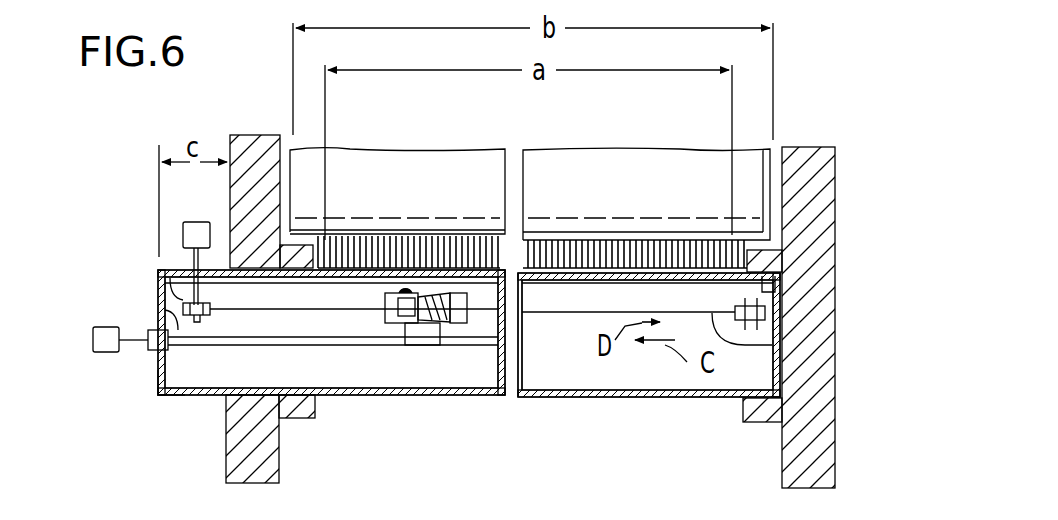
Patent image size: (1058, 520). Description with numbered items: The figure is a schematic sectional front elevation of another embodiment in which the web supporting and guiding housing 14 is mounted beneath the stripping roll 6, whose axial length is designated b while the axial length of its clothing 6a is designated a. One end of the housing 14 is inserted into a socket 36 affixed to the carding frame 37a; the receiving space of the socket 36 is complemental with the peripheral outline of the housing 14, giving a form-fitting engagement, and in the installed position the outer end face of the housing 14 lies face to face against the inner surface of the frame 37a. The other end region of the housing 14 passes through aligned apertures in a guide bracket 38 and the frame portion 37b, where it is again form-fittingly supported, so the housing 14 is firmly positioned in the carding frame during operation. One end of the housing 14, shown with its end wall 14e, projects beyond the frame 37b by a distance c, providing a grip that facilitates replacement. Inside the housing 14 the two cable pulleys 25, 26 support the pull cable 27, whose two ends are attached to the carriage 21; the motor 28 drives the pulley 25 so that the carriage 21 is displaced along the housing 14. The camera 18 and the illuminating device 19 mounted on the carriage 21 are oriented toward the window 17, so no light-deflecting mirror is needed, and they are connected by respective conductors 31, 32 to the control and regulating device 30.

The stripping roll 6 is at (590, 175).
The clothing 6a is at (520, 245).
The housing 14 is at (190, 396).
The housing end wall 14e is at (158, 400).
The window 17 is at (540, 282).
The camera 18 is at (400, 307).
The illuminating device 19 is at (440, 330).
The carriage 21 is at (420, 312).
The cable pulley 25 is at (165, 283).
The cable pulley 26 is at (763, 304).
The pull cable 27 is at (776, 345).
The motor 28 is at (195, 232).
The control and regulating device 30 is at (106, 346).
The conductor 31 is at (165, 318).
The conductor 32 is at (445, 325).
The socket 36 is at (748, 412).
The carding frame 37a is at (808, 450).
The frame portion 37b is at (240, 450).
The guide bracket 38 is at (292, 420).